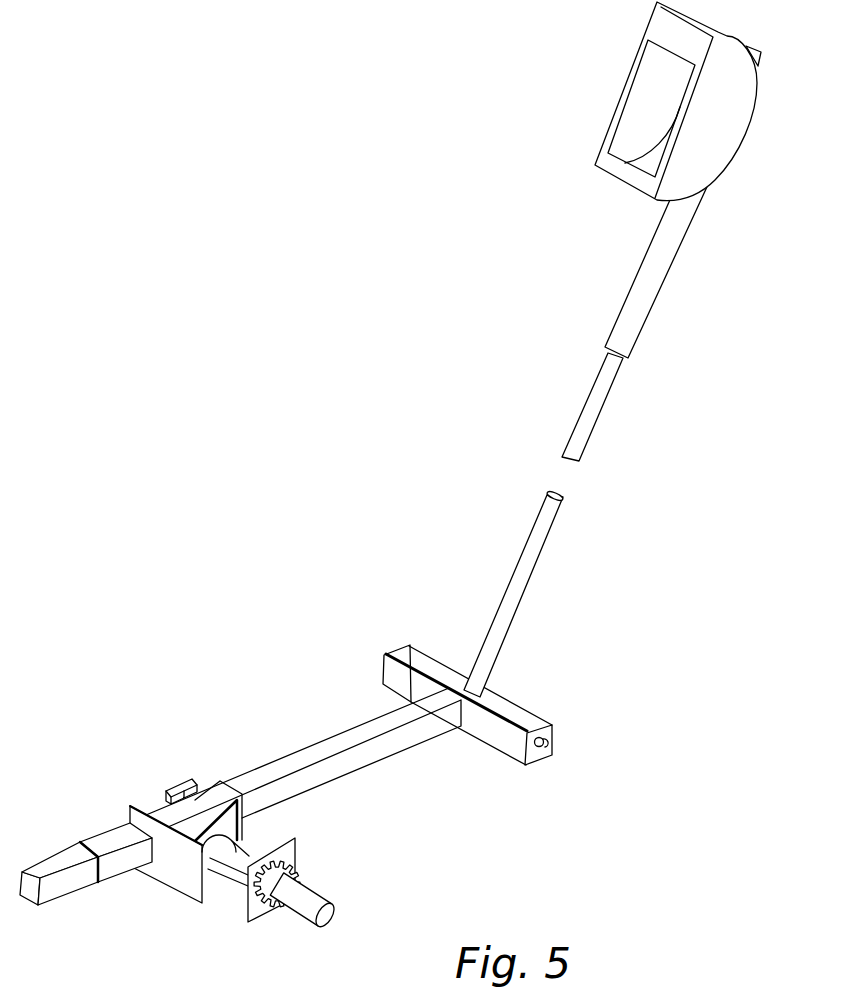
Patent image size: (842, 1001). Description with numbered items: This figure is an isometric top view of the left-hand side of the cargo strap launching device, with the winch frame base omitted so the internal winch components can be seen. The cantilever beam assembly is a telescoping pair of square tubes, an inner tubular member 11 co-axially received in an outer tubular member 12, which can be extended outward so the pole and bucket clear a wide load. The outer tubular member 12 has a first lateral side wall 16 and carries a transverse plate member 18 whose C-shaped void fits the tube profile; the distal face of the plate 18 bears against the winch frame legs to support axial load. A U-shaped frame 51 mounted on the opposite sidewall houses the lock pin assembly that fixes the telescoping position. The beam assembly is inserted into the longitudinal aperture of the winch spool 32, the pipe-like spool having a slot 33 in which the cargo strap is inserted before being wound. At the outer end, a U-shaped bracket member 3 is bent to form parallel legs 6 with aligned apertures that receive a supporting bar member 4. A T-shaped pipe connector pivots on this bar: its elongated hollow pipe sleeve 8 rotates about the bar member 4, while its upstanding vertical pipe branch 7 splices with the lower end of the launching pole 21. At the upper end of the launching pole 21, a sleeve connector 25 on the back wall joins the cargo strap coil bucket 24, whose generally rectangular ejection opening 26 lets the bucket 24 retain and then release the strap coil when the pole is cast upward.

The U-shaped bracket member 3 is at (478, 727).
The bar member 4 is at (550, 742).
The parallel legs 6 is at (533, 759).
The vertical pipe branch 7 is at (505, 612).
The elongated hollow pipe sleeve 8 is at (437, 672).
The inner tubular member 11 is at (325, 750).
The outer tubular member 12 is at (113, 837).
The first lateral side wall 16 is at (337, 768).
The transverse plate member 18 is at (168, 872).
The launching pole 21 is at (573, 447).
The cargo strap coil bucket 24 is at (723, 143).
The sleeve connector 25 is at (640, 307).
The ejection opening 26 is at (643, 108).
The spool 32 is at (237, 852).
The slot 33 is at (235, 865).
The U-shaped frame 51 is at (193, 782).